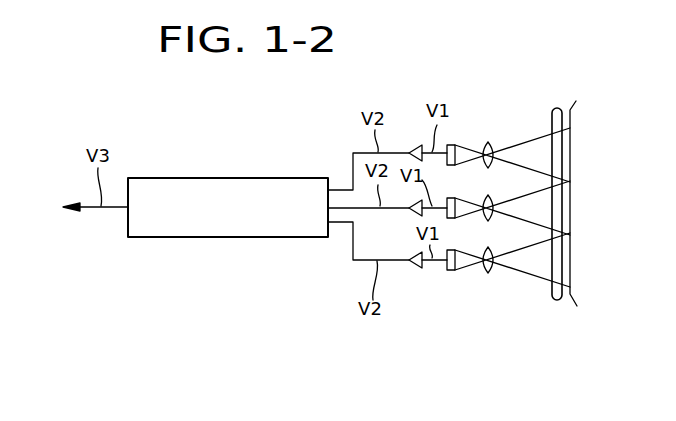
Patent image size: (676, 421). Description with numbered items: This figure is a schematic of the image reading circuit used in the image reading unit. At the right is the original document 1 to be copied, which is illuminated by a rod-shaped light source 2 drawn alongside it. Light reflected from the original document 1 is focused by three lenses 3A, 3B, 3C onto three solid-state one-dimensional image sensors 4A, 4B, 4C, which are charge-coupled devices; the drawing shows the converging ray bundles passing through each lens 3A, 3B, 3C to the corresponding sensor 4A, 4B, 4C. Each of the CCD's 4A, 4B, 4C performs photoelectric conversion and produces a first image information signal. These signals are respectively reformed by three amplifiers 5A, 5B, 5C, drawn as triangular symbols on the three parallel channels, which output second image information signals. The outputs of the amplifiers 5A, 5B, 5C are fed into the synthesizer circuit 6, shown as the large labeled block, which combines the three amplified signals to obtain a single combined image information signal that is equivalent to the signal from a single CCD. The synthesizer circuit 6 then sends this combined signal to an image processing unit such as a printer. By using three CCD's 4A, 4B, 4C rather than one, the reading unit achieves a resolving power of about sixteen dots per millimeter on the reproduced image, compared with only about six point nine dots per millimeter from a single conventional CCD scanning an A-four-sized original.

The original document 1 is at (566, 297).
The rod-shaped light source 2 is at (556, 107).
The lens 3A is at (492, 142).
The lens 3B is at (492, 197).
The lens 3C is at (492, 273).
The solid-state one-dimensional image sensor 4A is at (452, 145).
The solid-state one-dimensional image sensor 4B is at (452, 198).
The solid-state one-dimensional image sensor 4C is at (450, 271).
The amplifier 5A is at (414, 147).
The amplifier 5B is at (408, 214).
The amplifier 5C is at (411, 266).
The synthesizer circuit 6 is at (236, 178).